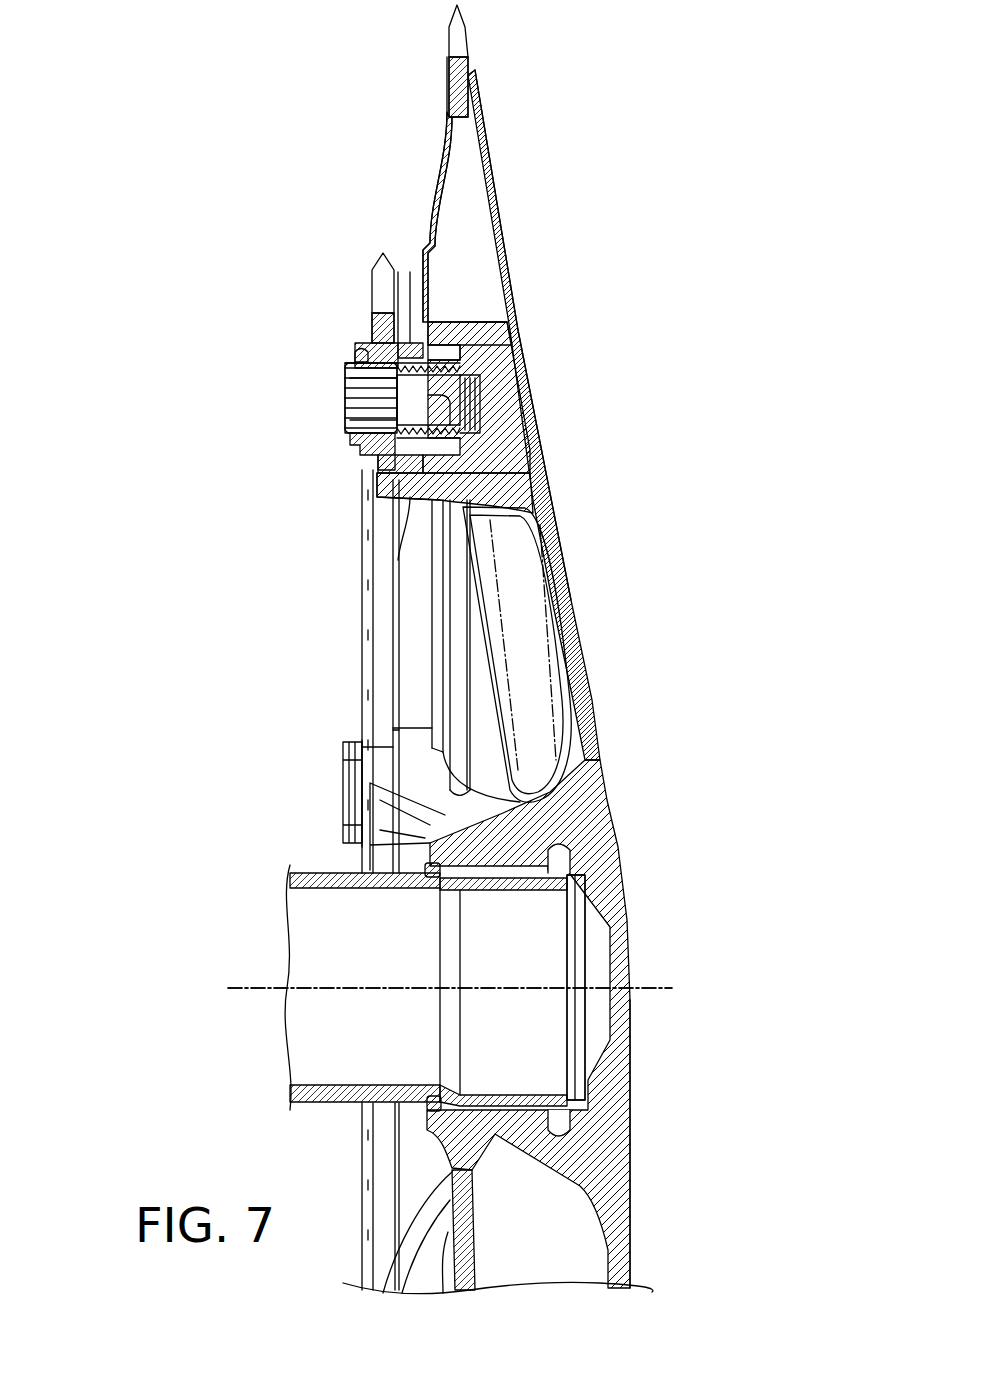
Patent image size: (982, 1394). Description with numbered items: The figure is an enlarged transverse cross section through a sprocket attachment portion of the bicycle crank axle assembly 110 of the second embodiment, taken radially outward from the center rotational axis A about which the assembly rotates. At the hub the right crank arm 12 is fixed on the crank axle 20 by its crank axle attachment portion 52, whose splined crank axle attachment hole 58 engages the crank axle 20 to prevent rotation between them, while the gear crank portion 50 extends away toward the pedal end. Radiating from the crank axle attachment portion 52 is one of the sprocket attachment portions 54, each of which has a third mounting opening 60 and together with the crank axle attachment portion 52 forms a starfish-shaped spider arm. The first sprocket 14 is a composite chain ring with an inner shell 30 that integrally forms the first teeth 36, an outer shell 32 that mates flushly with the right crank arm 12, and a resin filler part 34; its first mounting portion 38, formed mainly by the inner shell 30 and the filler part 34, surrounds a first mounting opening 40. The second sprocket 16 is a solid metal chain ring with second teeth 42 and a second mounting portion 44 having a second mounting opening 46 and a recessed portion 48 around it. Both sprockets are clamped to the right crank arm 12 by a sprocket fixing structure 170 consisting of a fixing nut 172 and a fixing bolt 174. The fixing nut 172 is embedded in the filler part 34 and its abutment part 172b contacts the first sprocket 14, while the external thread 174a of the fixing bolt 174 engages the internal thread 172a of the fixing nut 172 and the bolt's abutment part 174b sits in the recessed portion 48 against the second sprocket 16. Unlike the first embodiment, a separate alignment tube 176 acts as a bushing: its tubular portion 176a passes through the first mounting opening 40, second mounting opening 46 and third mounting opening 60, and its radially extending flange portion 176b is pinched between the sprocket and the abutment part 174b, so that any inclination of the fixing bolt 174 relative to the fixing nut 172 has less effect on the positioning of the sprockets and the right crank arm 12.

The bicycle crank axle assembly 110 is at (228, 246).
The first teeth 36 is at (470, 24).
The inner shell 30 is at (434, 178).
The outer shell 32 is at (490, 172).
The first sprocket 14 is at (502, 212).
The second teeth 42 is at (378, 262).
The alignment tube 176 is at (410, 272).
The recessed portion 48 is at (358, 345).
The flange portion 176b is at (358, 356).
The abutment part 174b is at (350, 363).
The tubular portion 176a is at (352, 382).
The fixing bolt 174 is at (338, 412).
The sprocket fixing structure 170 is at (303, 441).
The second mounting opening 46 is at (354, 450).
The second mounting portion 44 is at (364, 463).
The sprocket attachment portion 54 is at (366, 513).
The first mounting portion 38 is at (406, 510).
The filler part 34 is at (470, 320).
The abutment part 172b is at (440, 343).
The external thread 174a is at (460, 357).
The internal thread 172a is at (492, 392).
The third mounting opening 60 is at (478, 406).
The first mounting opening 40 is at (487, 416).
The fixing nut 172 is at (486, 446).
The right crank arm 12 is at (575, 600).
The second sprocket 16 is at (356, 643).
The crank axle 20 is at (304, 864).
The crank axle attachment hole 58 is at (522, 910).
The crank axle attachment portion 52 is at (632, 969).
The gear crank portion 50 is at (632, 1229).
The center rotational axis A is at (242, 982).